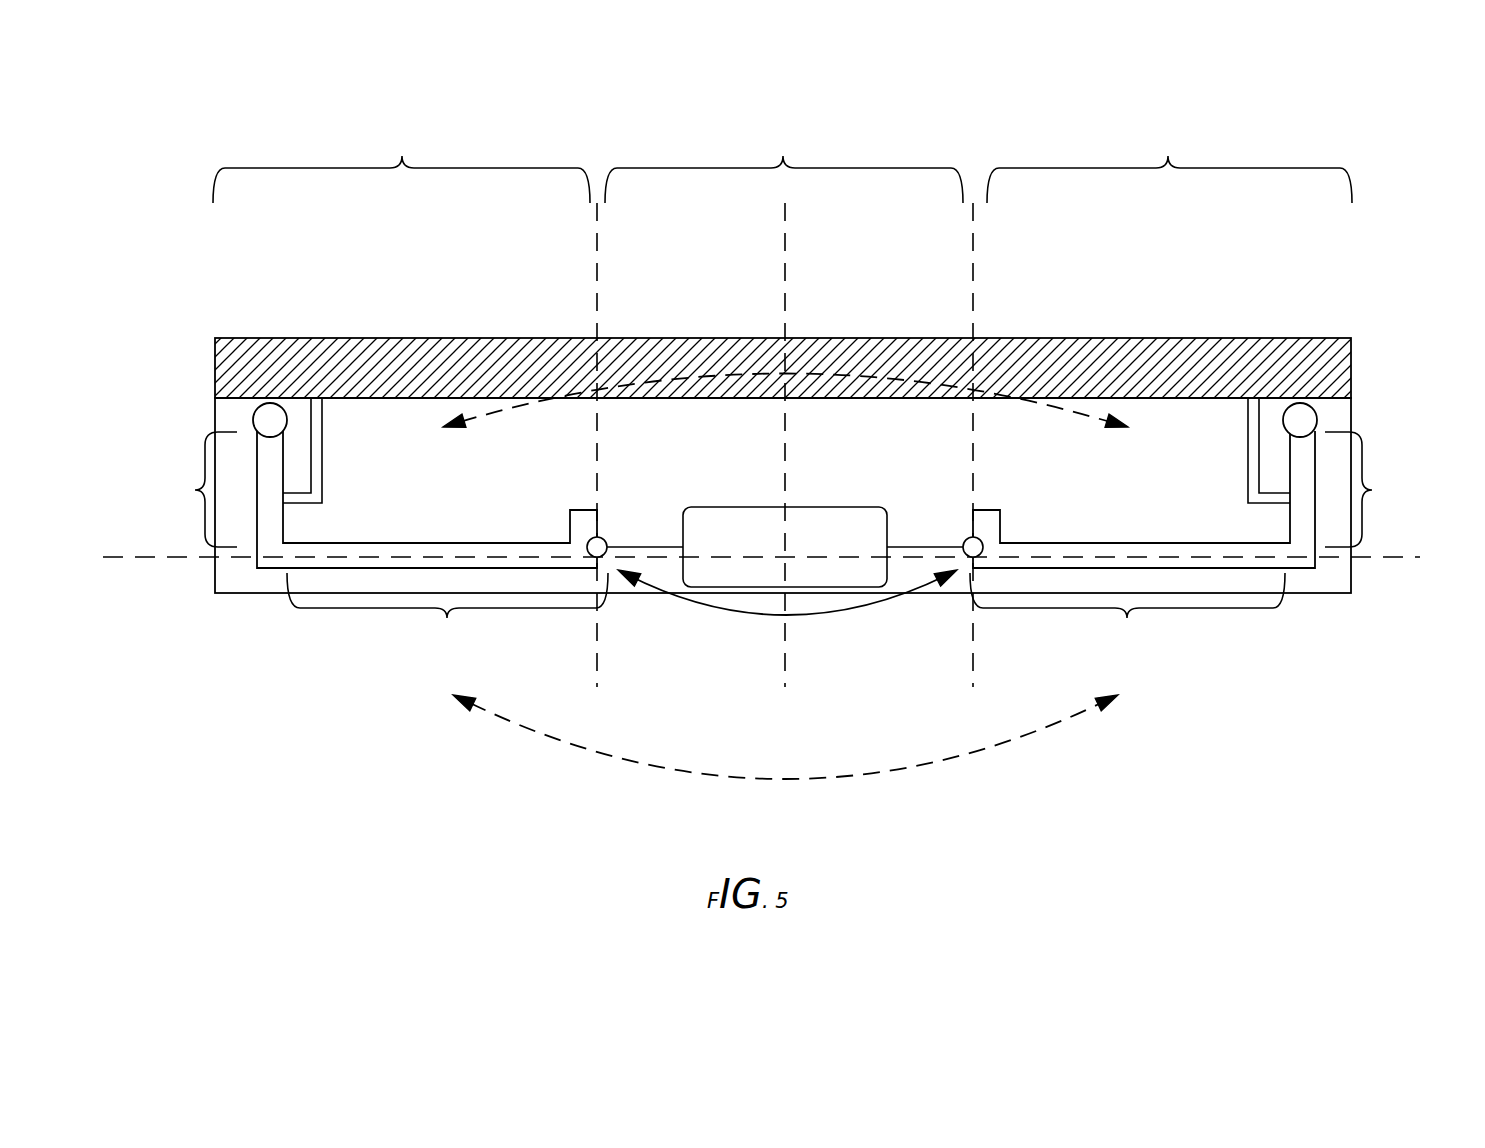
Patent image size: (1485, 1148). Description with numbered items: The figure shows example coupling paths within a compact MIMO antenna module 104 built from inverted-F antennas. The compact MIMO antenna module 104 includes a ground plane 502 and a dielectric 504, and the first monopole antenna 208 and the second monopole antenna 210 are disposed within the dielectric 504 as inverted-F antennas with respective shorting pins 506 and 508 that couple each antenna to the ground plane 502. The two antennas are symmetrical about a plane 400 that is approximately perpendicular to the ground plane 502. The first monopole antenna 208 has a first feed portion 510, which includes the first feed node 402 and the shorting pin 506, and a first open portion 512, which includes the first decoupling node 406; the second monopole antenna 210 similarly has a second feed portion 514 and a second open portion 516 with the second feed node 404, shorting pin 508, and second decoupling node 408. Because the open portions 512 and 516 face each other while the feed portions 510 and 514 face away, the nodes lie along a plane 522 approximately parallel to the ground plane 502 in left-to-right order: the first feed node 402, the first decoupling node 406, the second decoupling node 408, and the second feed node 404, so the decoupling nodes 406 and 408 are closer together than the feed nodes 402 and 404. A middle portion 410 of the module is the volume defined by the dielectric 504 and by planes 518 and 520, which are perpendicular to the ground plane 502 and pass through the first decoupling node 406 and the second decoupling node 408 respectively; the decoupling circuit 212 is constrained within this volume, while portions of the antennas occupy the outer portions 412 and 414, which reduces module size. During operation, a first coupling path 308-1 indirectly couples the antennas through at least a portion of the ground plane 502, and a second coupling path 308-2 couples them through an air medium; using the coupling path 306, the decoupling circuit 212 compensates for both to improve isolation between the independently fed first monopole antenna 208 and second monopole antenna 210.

The compact MIMO antenna module 104 is at (762, 480).
The first monopole antenna 208 is at (369, 542).
The second monopole antenna 210 is at (1226, 542).
The decoupling circuit 212 is at (800, 574).
The coupling path 306 is at (817, 612).
The first coupling path 308-1 is at (1097, 415).
The second coupling path 308-2 is at (913, 770).
The plane 400 is at (785, 277).
The first feed node 402 is at (254, 424).
The second feed node 404 is at (1316, 424).
The first decoupling node 406 is at (604, 538).
The second decoupling node 408 is at (966, 538).
The middle portion 410 is at (783, 156).
The outer portion 412 is at (402, 156).
The outer portion 414 is at (1168, 156).
The ground plane 502 is at (467, 337).
The dielectric 504 is at (255, 594).
The shorting pin 506 is at (322, 494).
The shorting pin 508 is at (1249, 494).
The first feed portion 510 is at (195, 490).
The first open portion 512 is at (447, 618).
The second feed portion 514 is at (1388, 503).
The second open portion 516 is at (1127, 618).
The plane 518 is at (597, 277).
The plane 520 is at (973, 273).
The plane 522 is at (116, 560).